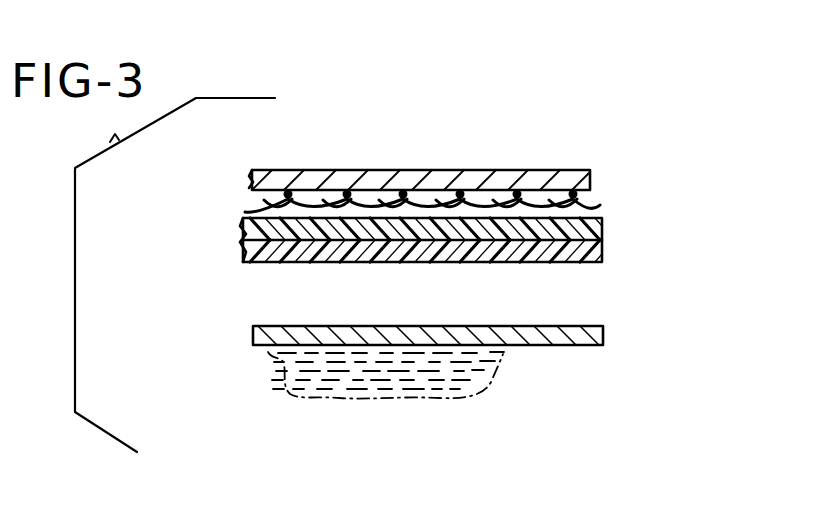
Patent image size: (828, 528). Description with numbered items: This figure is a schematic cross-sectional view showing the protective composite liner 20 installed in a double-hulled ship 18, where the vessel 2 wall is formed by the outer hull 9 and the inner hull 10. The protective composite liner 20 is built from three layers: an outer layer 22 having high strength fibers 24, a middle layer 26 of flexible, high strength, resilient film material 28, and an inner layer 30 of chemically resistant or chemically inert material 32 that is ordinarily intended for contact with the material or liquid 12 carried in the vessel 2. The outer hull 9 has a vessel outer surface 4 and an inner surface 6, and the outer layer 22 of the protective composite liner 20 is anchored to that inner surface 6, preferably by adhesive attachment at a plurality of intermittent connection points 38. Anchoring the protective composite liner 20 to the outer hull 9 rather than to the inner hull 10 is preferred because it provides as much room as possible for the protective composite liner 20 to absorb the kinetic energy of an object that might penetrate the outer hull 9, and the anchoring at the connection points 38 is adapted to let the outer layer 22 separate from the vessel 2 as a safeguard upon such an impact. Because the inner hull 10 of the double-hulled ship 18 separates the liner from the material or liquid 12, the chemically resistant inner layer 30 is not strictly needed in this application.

The vessel 2 is at (422, 152).
The vessel outer surface 4 is at (338, 170).
The inner surface 6 is at (379, 190).
The outer hull 9 is at (545, 175).
The inner hull 10 is at (535, 346).
The material or liquid 12 is at (380, 372).
The double-hulled ship 18 is at (634, 152).
The protective composite liner 20 is at (544, 271).
The outer layer 22 is at (240, 198).
The high strength fibers 24 is at (598, 214).
The middle layer 26 is at (243, 229).
The film material 28 is at (603, 228).
The inner layer 30 is at (243, 247).
The chemically resistant or chemically inert material 32 is at (603, 250).
The connection points 38 is at (513, 176).